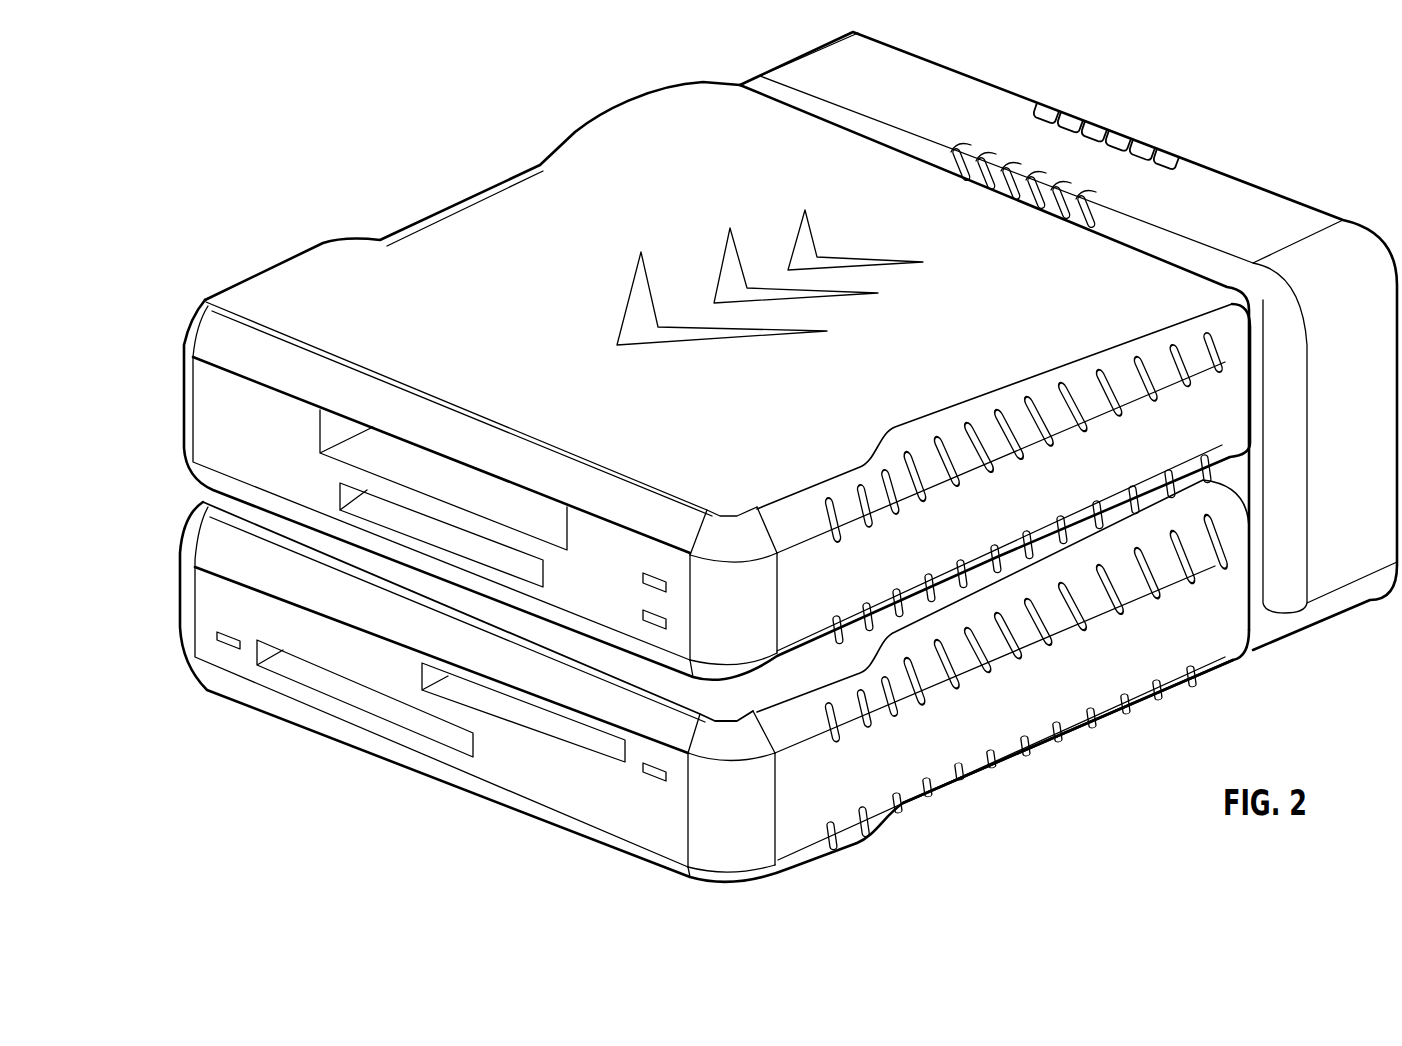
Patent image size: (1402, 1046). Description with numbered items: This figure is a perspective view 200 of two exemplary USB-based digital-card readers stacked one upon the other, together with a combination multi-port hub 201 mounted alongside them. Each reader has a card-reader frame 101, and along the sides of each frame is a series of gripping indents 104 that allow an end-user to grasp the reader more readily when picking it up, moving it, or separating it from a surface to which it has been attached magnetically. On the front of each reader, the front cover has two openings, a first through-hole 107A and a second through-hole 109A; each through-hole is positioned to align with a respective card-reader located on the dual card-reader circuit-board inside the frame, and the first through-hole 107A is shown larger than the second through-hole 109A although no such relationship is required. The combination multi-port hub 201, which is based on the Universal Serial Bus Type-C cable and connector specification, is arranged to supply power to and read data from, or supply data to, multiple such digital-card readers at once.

The perspective view 200 is at (271, 117).
The combination multi-port hub 201 is at (948, 60).
The card-reader frame 101 is at (273, 267).
The gripping indents 104 is at (460, 202).
The first through-hole 107A is at (370, 503).
The second through-hole 109A is at (357, 448).